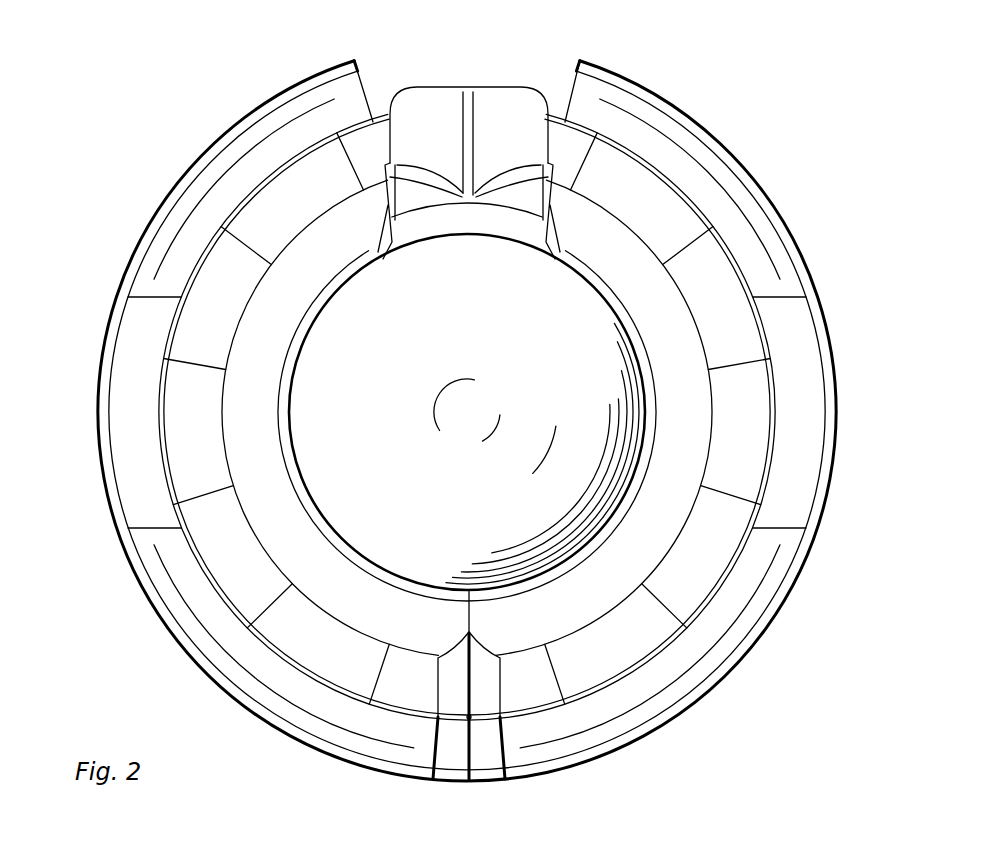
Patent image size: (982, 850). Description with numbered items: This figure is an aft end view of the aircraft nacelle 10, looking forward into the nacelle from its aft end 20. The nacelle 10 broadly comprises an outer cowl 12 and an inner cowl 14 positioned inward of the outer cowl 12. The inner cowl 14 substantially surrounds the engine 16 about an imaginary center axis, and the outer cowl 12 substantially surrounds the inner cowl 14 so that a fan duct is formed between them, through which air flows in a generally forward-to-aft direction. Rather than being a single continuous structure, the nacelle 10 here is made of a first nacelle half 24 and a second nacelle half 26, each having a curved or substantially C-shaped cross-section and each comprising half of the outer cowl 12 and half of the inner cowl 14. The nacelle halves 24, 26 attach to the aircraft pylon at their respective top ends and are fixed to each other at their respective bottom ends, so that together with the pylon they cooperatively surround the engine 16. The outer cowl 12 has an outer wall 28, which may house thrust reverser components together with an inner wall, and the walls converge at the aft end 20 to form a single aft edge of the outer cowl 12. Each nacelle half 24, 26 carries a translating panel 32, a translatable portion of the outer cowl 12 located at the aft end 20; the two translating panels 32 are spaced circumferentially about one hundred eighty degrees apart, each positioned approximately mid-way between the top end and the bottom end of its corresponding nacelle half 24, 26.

The aircraft nacelle 10 is at (855, 88).
The outer cowl 12 is at (702, 700).
The inner cowl 14 is at (277, 322).
The engine 16 is at (338, 457).
The aft end 20 is at (687, 193).
The first nacelle half 24 is at (300, 740).
The second nacelle half 26 is at (628, 747).
The outer wall 28 is at (748, 592).
The translating panel 32 is at (122, 422).